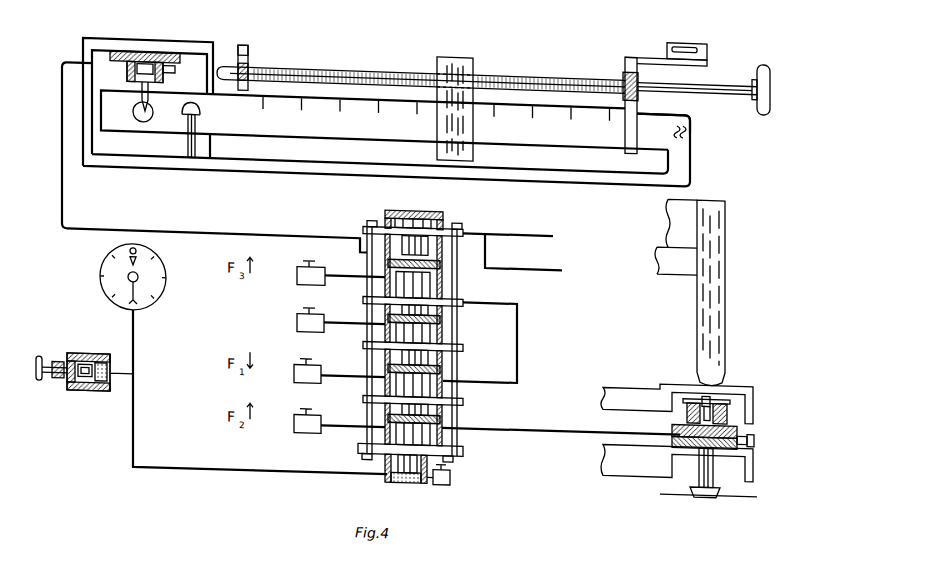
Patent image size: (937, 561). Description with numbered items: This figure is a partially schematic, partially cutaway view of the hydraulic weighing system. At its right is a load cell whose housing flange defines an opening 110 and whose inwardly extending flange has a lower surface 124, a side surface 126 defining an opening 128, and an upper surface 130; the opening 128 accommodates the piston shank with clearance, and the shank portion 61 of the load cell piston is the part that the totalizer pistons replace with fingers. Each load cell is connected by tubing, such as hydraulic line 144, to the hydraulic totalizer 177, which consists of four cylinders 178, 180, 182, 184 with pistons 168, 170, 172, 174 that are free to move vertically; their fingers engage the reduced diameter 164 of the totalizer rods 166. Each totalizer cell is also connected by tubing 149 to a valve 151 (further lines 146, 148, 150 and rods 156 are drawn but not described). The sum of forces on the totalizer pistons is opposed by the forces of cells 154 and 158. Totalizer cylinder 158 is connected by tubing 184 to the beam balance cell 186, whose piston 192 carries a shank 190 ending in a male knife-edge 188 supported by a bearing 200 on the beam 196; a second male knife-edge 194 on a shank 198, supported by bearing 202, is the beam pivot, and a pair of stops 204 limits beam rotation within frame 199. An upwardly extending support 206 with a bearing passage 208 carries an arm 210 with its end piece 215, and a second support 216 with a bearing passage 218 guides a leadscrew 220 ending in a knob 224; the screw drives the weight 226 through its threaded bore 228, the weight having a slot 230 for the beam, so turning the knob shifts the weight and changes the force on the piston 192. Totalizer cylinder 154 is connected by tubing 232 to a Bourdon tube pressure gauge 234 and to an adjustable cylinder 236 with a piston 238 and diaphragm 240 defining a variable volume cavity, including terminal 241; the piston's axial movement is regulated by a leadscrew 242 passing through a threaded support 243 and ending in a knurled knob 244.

The shank portion 61 is at (722, 371).
The opening 110 is at (740, 407).
The lower surface 124 is at (688, 391).
The side surface 126 is at (728, 376).
The opening 128 is at (701, 375).
The upper surface 130 is at (690, 382).
The hydraulic line 144 is at (528, 413).
The conductor 146 is at (518, 335).
The conductor 148 is at (552, 252).
The tubing 149 is at (345, 263).
The conductor 150 is at (552, 217).
The valve 151 is at (305, 253).
The totalizer cylinder 154 is at (428, 466).
The tie rod 156 is at (466, 219).
The totalizer cylinder 158 is at (416, 198).
The reduced diameter 164 is at (455, 397).
The totalizer rods 166 is at (367, 430).
The piston 168 is at (385, 279).
The piston 170 is at (383, 325).
The piston 172 is at (383, 373).
The piston 174 is at (380, 423).
The hydraulic totalizer 177 is at (362, 208).
The cylinder 178 is at (443, 275).
The cylinder 180 is at (443, 324).
The cylinder 182 is at (445, 368).
The cylinder 184 is at (232, 225).
The beam balance cell 186 is at (126, 46).
The male knife-edge 188 is at (139, 103).
The shank 190 is at (149, 95).
The piston 192 is at (164, 77).
The second male knife-edge 194 is at (199, 101).
The beam 196 is at (691, 91).
The shank 198 is at (182, 139).
The frame 199 is at (241, 157).
The bearing 200 is at (134, 110).
The bearing 202 is at (207, 109).
The stops 204 is at (688, 112).
The upwardly extending support 206 is at (637, 96).
The bearing passage 208 is at (640, 60).
The arm 210 is at (647, 35).
The stop block 215 is at (700, 24).
The second upwardly extending support 216 is at (249, 40).
The bearing passage 218 is at (237, 54).
The leadscrew 220 is at (333, 48).
The knob 224 is at (771, 61).
The weight 226 is at (478, 62).
The threaded bore 228 is at (463, 44).
The slot 230 is at (470, 80).
The tubing 232 is at (262, 459).
The Bourdon tube pressure gauge 234 is at (154, 297).
The adjustable cylinder 236 is at (85, 347).
The piston 238 is at (82, 389).
The diaphragm 240 is at (107, 389).
The terminal 241 is at (118, 346).
The leadscrew 242 is at (60, 355).
The threaded support 243 is at (57, 383).
The knurled knob 244 is at (37, 380).